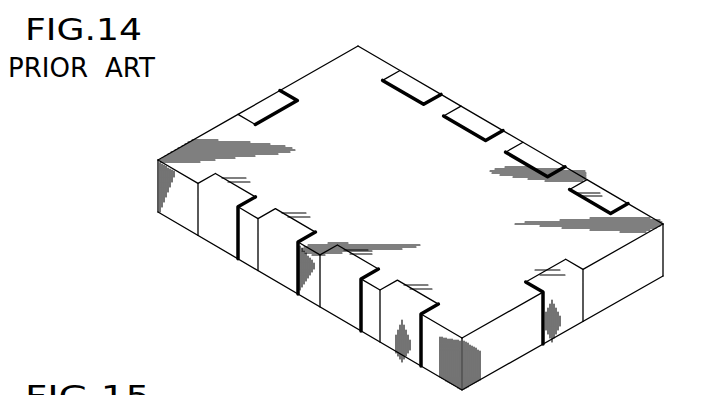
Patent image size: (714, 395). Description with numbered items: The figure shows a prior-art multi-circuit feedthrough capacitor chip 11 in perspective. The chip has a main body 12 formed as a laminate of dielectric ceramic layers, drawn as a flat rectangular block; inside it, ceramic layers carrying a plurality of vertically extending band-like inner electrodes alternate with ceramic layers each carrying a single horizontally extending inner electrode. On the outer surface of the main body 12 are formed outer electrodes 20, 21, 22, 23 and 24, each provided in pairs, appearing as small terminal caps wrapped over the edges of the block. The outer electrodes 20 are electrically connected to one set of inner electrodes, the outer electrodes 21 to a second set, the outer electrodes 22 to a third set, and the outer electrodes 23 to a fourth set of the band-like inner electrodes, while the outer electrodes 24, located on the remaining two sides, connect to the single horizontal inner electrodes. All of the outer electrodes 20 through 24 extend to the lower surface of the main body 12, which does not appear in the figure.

The multi-circuit feedthrough capacitor chip 11 is at (485, 88).
The main body 12 is at (338, 63).
The outer electrodes 20 is at (408, 75).
The outer electrodes 21 is at (480, 118).
The outer electrodes 22 is at (530, 152).
The outer electrodes 23 is at (590, 185).
The outer electrodes 24 is at (255, 108).